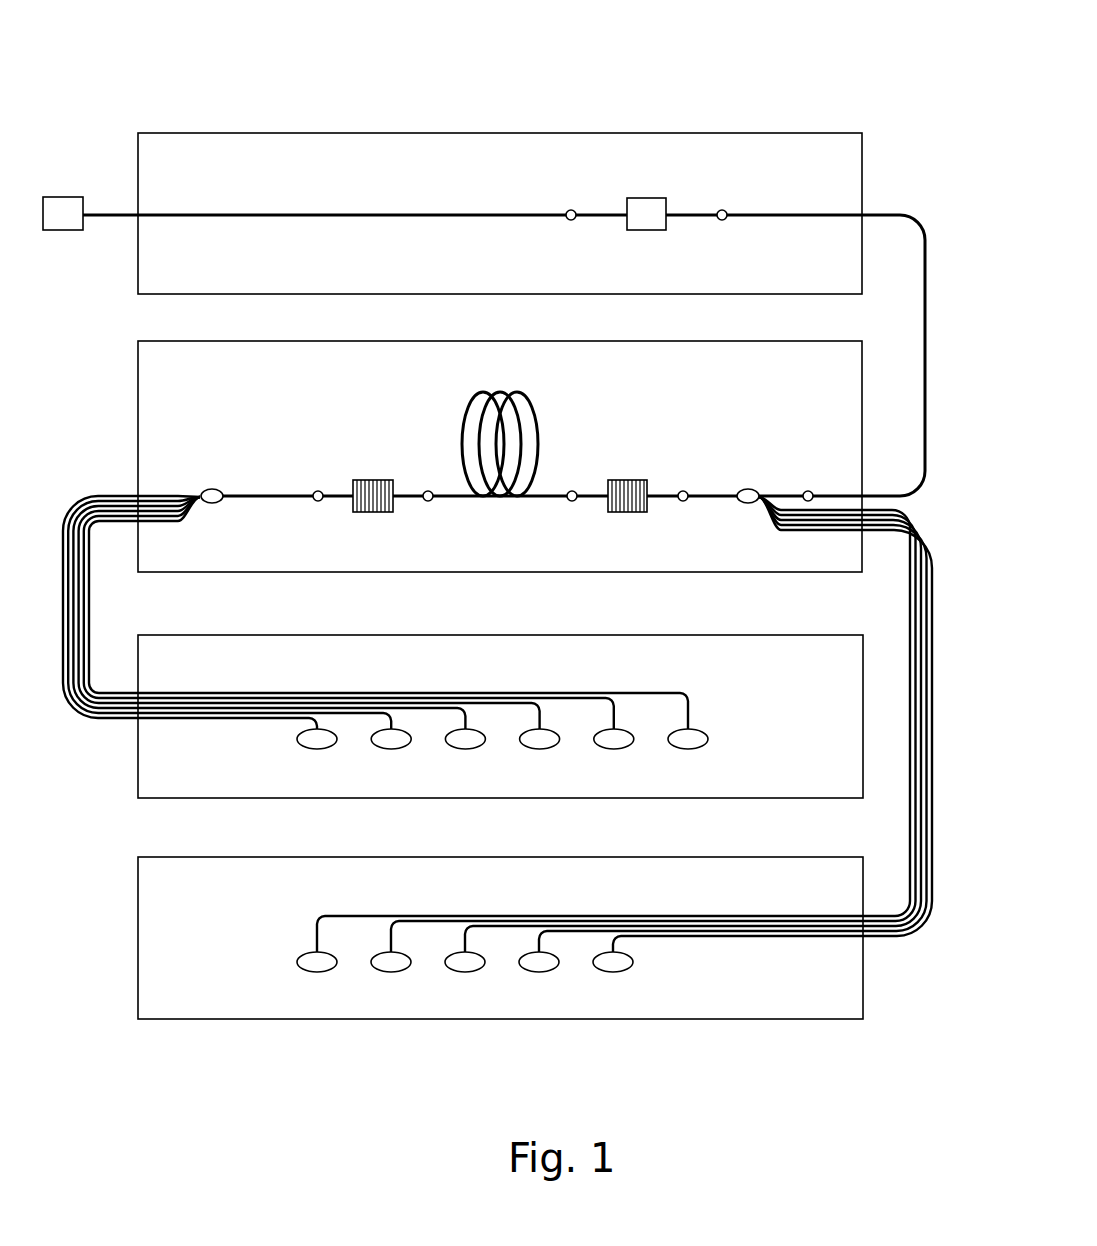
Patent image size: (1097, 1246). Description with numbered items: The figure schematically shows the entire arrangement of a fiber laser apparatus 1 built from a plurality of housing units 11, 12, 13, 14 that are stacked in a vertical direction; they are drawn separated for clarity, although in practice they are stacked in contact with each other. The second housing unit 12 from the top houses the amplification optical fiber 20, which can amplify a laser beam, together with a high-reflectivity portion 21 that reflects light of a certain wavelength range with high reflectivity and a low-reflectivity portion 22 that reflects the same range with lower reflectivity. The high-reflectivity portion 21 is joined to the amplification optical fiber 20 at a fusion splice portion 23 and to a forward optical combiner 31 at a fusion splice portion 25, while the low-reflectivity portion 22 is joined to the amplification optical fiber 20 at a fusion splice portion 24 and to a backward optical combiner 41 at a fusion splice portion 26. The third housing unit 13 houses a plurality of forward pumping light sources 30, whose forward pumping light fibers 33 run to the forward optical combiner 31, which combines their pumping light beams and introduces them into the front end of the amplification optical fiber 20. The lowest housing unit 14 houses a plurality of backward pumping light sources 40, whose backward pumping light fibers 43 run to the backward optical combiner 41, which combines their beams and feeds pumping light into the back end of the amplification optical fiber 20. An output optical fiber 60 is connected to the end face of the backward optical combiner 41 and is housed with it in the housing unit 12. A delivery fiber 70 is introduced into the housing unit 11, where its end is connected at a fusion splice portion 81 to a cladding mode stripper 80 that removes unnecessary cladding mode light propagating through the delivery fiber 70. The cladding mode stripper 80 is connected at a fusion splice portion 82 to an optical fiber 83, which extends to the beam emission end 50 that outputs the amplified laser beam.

The fiber laser apparatus 1 is at (855, 84).
The housing unit 11 is at (138, 278).
The second housing unit 12 is at (138, 418).
The third housing unit 13 is at (138, 766).
The lowest housing unit 14 is at (138, 948).
The amplification optical fiber 20 is at (535, 400).
The high-reflectivity portion 21 is at (377, 480).
The low-reflectivity portion 22 is at (628, 480).
The fusion splice portion 23 is at (428, 502).
The fusion splice portion 24 is at (572, 502).
The fusion splice portion 25 is at (318, 490).
The fusion splice portion 26 is at (684, 490).
The forward pumping light source 30 is at (317, 749).
The forward optical combiner 31 is at (214, 488).
The forward pumping light fiber 33 is at (80, 490).
The backward pumping light source 40 is at (317, 972).
The backward optical combiner 41 is at (748, 488).
The backward pumping light fiber 43 is at (932, 535).
The beam emission end 50 is at (67, 197).
The output optical fiber 60 is at (808, 490).
The delivery fiber 70 is at (838, 492).
The cladding mode stripper 80 is at (647, 197).
The fusion splice portion 81 is at (723, 209).
The fusion splice portion 82 is at (571, 209).
The optical fiber 83 is at (304, 211).